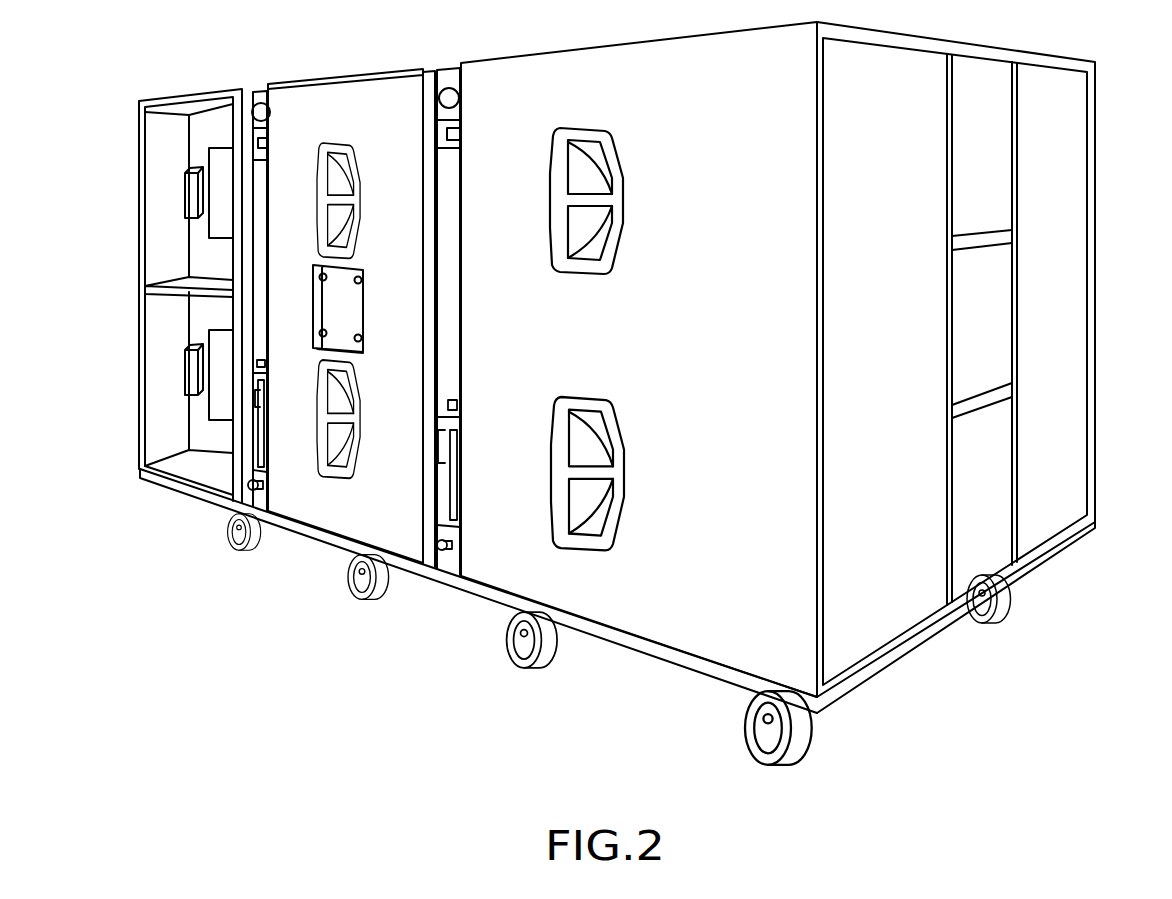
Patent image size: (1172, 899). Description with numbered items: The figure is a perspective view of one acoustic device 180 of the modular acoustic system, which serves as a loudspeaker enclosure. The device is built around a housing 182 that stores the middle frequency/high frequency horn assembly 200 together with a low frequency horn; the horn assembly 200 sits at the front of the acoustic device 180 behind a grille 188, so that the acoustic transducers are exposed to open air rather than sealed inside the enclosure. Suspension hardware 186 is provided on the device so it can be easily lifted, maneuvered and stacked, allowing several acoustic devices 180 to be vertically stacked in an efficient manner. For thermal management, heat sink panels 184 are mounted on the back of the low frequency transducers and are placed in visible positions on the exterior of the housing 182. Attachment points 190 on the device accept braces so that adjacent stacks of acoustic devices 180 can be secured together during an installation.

The acoustic device 180 is at (572, 679).
The housing 182 is at (530, 569).
The heat sink panels 184 is at (223, 200).
The suspension hardware 186 is at (258, 450).
The grille 188 is at (1055, 222).
The attachment points 190 is at (346, 300).
The MF/HF horn assembly 200 is at (977, 368).